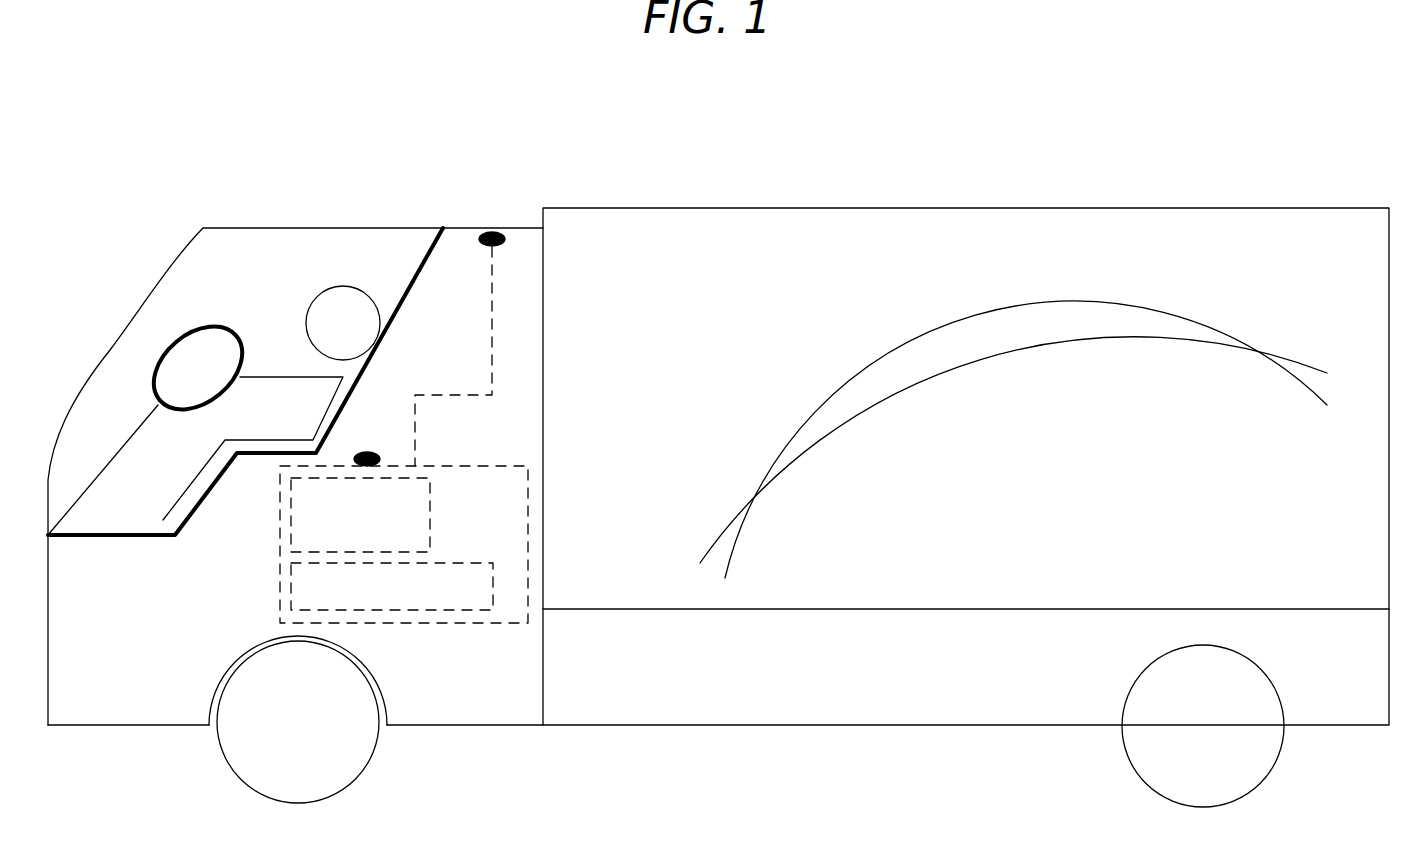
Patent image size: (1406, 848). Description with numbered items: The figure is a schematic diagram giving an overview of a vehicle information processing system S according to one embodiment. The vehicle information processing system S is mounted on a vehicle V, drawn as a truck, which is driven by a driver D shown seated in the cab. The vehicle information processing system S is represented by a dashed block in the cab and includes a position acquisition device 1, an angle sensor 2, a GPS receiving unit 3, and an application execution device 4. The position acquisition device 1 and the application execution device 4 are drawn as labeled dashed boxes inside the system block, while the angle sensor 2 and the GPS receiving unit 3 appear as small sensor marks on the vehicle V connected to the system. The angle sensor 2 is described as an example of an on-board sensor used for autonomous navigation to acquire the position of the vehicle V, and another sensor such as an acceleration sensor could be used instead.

The vehicle V is at (803, 208).
The driver D is at (345, 286).
The vehicle information processing system S is at (477, 465).
The position acquisition device 1 is at (432, 520).
The angle sensor 2 is at (370, 451).
The GPS receiving unit 3 is at (492, 232).
The application execution device 4 is at (473, 563).